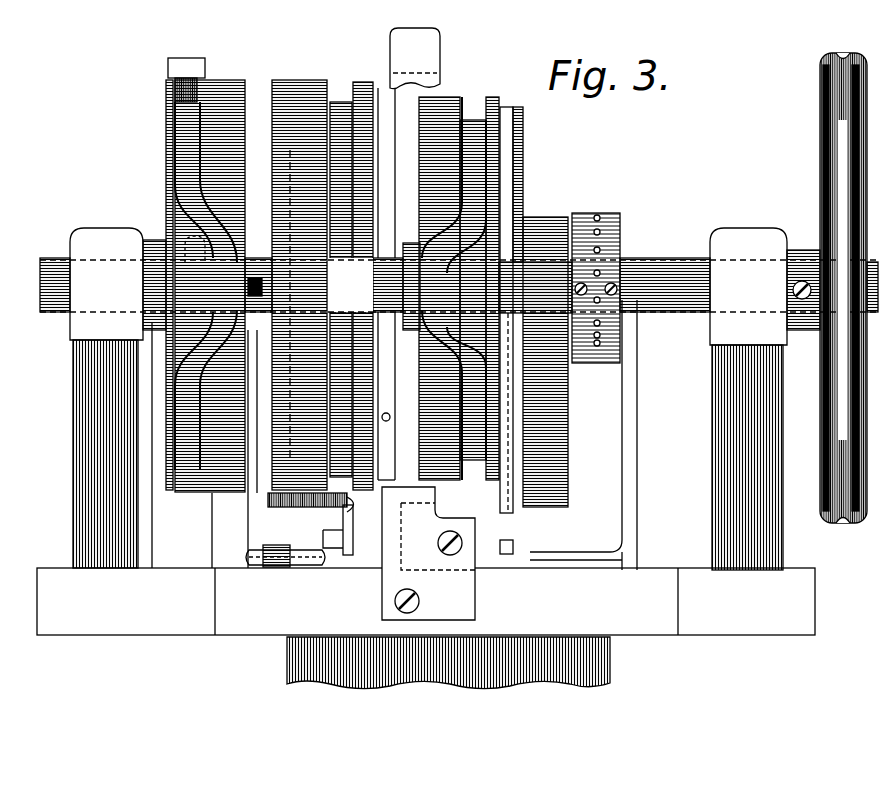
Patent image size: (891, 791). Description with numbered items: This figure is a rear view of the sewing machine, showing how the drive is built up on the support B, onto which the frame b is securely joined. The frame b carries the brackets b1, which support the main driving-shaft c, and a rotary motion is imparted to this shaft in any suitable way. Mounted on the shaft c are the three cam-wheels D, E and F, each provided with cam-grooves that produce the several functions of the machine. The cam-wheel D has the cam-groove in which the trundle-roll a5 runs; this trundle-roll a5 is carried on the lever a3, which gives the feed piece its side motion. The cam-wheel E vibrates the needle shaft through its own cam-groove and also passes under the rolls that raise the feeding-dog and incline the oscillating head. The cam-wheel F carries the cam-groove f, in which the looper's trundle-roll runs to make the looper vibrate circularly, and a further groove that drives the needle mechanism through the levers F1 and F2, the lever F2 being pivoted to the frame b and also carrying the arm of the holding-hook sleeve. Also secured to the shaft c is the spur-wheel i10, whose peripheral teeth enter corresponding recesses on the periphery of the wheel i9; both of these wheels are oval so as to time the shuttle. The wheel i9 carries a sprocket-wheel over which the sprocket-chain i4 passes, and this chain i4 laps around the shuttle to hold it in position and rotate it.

The frame b is at (426, 601).
The support B is at (287, 657).
The brackets b1 is at (428, 399).
The main driving-shaft c is at (660, 276).
The cam-wheel D is at (205, 274).
The lever a3 is at (168, 65).
The trundle-roll a5 is at (175, 93).
The cam-wheel E is at (311, 284).
The cam-wheel F is at (459, 271).
The cam-groove f is at (454, 288).
The lever F1 is at (524, 158).
The lever F2 is at (514, 181).
The sprocket-chain i4 is at (568, 420).
The wheel i9 is at (622, 350).
The spur-wheel i10 is at (622, 256).